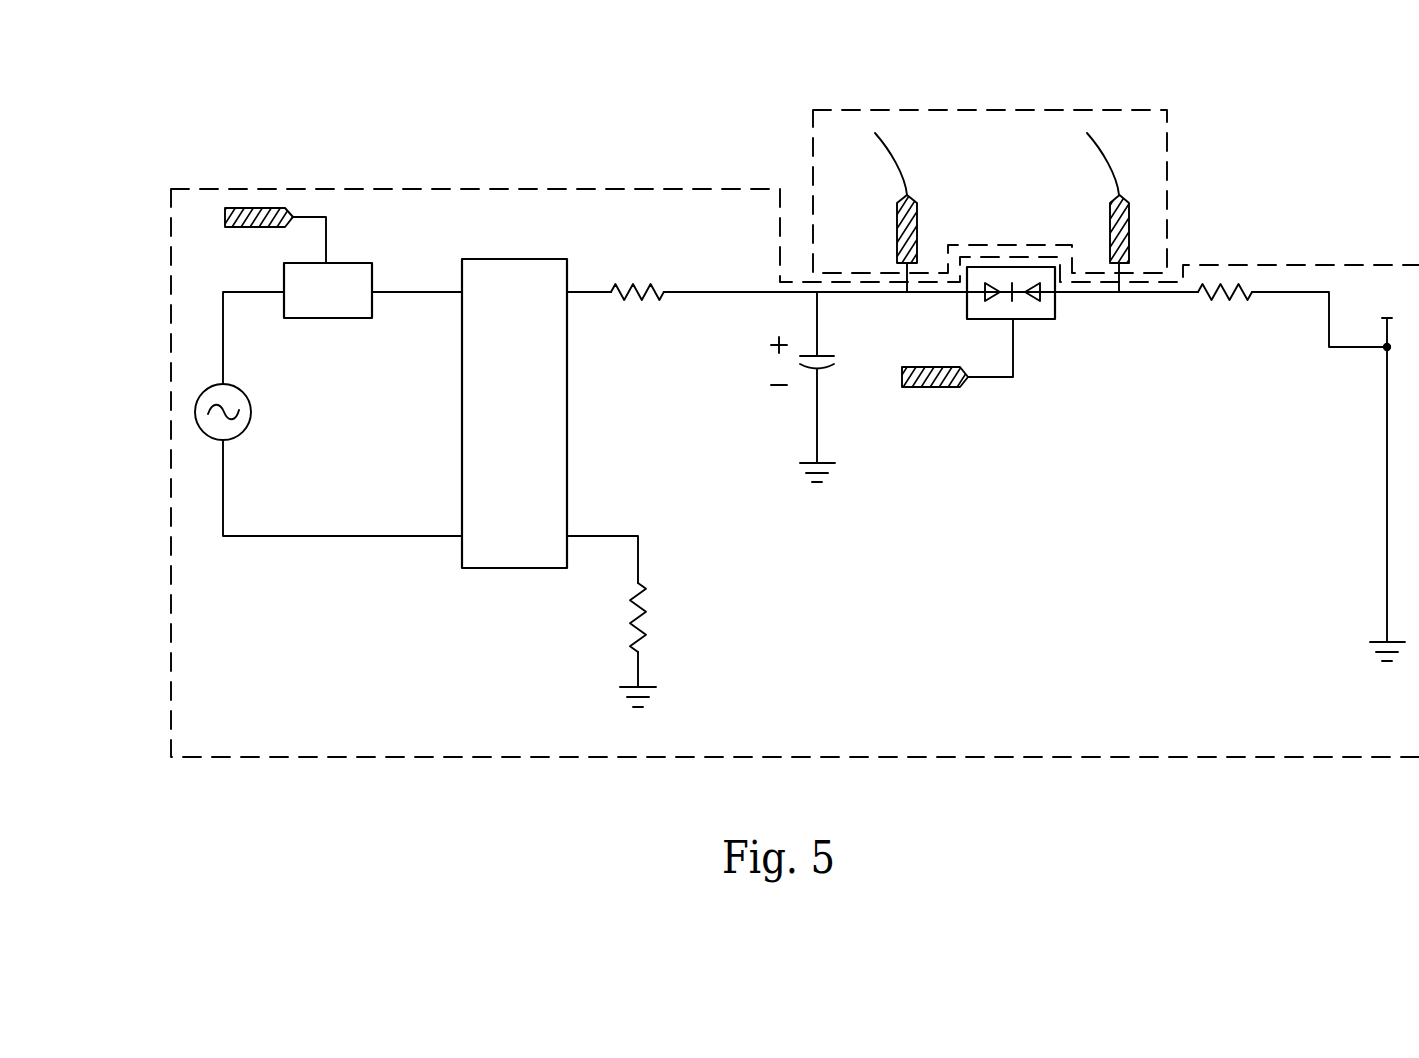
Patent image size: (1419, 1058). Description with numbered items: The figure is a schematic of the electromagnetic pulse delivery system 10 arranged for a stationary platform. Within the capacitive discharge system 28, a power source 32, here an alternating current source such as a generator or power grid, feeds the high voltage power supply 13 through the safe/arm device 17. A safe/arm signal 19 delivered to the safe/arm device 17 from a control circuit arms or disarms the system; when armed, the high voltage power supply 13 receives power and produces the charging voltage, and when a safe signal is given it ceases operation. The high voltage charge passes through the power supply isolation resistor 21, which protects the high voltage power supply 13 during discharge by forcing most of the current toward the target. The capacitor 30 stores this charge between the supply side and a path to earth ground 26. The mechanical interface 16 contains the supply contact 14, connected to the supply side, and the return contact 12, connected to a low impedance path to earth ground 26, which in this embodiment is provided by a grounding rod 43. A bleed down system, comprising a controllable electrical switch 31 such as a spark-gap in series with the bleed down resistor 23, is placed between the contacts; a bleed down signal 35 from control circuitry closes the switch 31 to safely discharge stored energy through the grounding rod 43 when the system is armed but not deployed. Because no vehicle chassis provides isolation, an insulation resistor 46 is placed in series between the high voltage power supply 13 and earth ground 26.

The electromagnetic pulse delivery system 10 is at (540, 108).
The return contact 12 is at (1117, 195).
The high voltage power supply 13 is at (480, 568).
The supply contact 14 is at (907, 195).
The mechanical interface 16 is at (975, 108).
The safe/arm device 17 is at (372, 310).
The safe/arm signal 19 is at (268, 206).
The power supply isolation resistor 21 is at (640, 298).
The bleed down resistor 23 is at (1252, 292).
The earth ground 26 is at (640, 688).
The capacitive discharge system 28 is at (427, 760).
The capacitor 30 is at (825, 356).
The controllable electrical switch 31 is at (1042, 319).
The power source 32 is at (195, 410).
The bleed down signal 35 is at (920, 388).
The grounding rod 43 is at (1387, 520).
The insulation resistor 46 is at (640, 650).